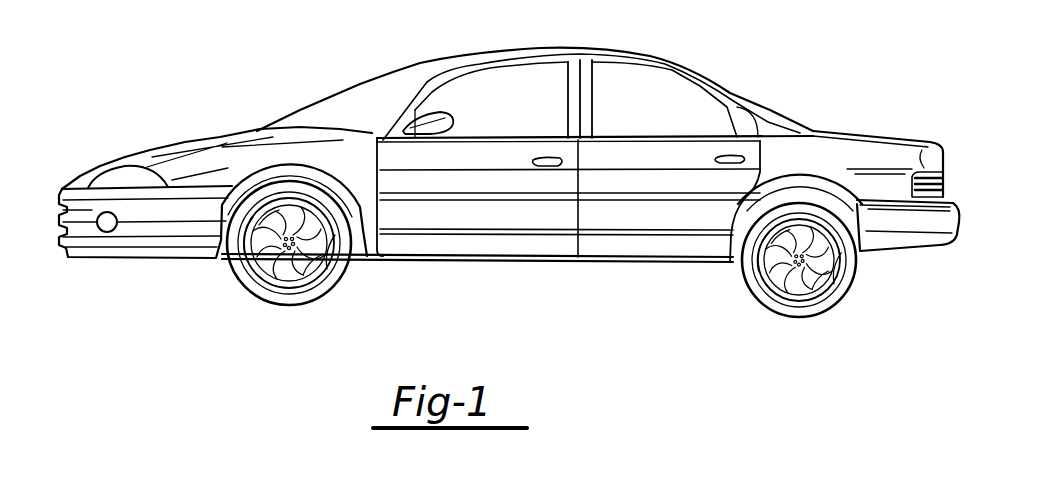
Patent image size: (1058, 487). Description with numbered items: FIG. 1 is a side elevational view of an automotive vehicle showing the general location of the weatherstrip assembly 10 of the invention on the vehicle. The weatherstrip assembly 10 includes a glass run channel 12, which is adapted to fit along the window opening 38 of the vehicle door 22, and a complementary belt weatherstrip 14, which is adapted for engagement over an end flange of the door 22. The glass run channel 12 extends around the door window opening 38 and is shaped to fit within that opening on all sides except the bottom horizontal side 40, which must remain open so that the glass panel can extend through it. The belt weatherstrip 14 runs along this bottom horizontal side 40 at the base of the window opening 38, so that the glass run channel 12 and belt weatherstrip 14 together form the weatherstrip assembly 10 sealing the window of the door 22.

The weatherstrip assembly 10 is at (462, 88).
The glass run channel 12 is at (512, 70).
The belt weatherstrip 14 is at (474, 142).
The door 22 is at (486, 212).
The window opening 38 is at (549, 104).
The bottom horizontal side 40 is at (551, 130).